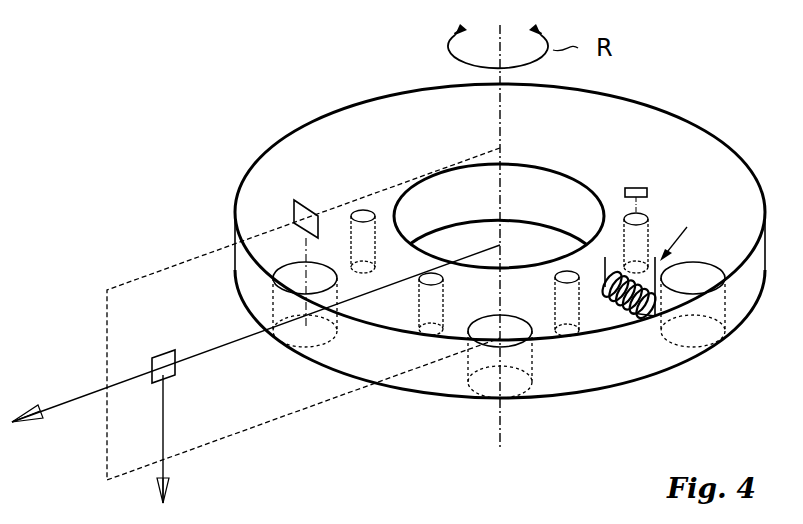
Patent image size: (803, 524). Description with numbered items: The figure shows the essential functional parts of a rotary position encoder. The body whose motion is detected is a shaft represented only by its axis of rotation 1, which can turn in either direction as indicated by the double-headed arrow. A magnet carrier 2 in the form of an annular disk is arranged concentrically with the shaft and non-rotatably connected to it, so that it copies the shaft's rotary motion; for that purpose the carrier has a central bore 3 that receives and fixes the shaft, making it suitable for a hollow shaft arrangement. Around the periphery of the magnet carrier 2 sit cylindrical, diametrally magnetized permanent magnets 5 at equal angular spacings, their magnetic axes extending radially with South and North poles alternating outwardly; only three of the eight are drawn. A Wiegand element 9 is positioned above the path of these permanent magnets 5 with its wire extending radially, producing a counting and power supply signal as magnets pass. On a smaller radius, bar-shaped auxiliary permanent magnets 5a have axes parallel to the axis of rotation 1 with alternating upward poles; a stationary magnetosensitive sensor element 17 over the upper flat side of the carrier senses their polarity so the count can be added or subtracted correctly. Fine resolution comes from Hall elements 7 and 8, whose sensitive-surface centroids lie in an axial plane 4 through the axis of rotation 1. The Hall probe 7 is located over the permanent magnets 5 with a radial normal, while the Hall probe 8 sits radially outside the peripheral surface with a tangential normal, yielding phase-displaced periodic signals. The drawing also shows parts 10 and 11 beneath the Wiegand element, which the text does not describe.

The axis of rotation 1 is at (502, 133).
The magnet carrier 2 is at (686, 150).
The central bore 3 is at (442, 204).
The axial plane 4 is at (148, 291).
The permanent magnet 5 is at (292, 338).
The auxiliary permanent magnet 5a is at (357, 234).
The Hall probe 7 is at (305, 208).
The Hall probe 8 is at (168, 355).
The Wiegand element 9 is at (683, 235).
The coil holder 10 is at (653, 318).
The coil 11 is at (618, 305).
The magnetosensitive sensor element 17 is at (643, 188).